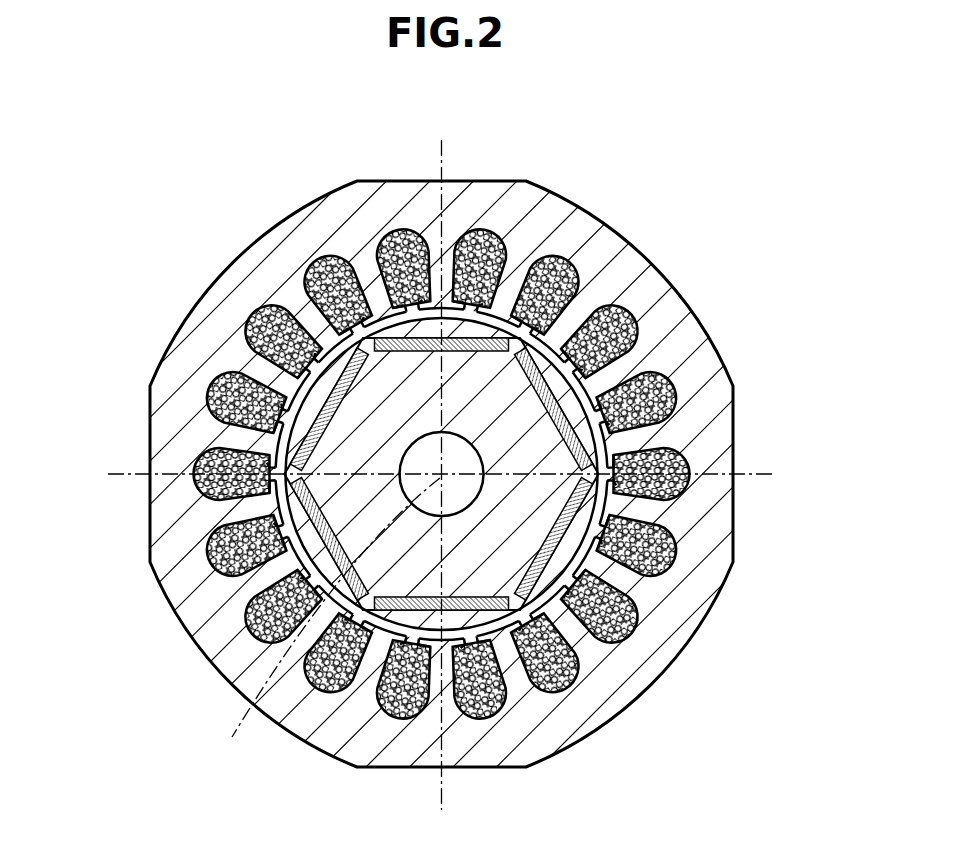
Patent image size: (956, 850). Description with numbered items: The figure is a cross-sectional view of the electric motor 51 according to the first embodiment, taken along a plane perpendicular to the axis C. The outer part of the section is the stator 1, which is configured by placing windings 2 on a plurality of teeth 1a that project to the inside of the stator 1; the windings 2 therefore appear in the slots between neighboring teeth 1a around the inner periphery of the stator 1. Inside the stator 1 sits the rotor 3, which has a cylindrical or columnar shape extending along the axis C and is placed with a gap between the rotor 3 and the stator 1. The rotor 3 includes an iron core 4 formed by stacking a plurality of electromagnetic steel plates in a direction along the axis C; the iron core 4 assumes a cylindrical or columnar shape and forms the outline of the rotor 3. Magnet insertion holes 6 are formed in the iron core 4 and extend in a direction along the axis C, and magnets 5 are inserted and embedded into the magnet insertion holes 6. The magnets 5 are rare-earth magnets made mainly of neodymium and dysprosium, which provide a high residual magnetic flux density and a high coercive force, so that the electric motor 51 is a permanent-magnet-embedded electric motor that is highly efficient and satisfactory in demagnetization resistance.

The electric motor 51 is at (673, 183).
The stator 1 is at (632, 267).
The teeth 1a is at (377, 307).
The windings 2 is at (220, 377).
The rotor 3 is at (471, 580).
The iron core 4 is at (413, 580).
The magnets 5 is at (590, 438).
The magnet insertion holes 6 is at (560, 392).
The axis C is at (322, 614).